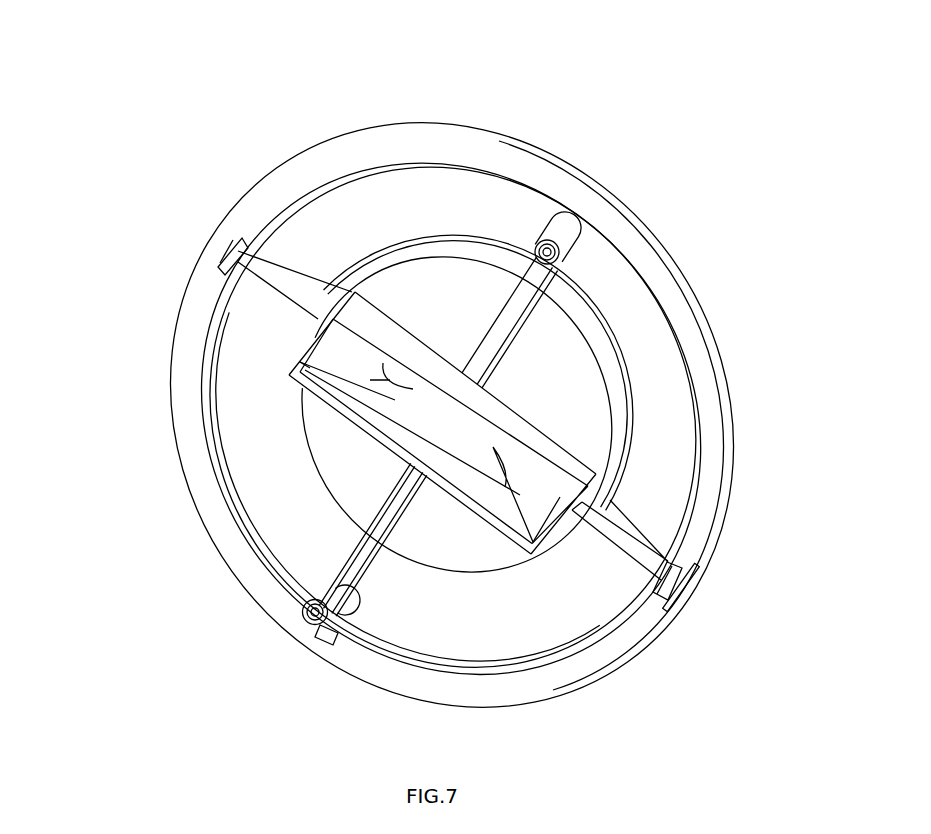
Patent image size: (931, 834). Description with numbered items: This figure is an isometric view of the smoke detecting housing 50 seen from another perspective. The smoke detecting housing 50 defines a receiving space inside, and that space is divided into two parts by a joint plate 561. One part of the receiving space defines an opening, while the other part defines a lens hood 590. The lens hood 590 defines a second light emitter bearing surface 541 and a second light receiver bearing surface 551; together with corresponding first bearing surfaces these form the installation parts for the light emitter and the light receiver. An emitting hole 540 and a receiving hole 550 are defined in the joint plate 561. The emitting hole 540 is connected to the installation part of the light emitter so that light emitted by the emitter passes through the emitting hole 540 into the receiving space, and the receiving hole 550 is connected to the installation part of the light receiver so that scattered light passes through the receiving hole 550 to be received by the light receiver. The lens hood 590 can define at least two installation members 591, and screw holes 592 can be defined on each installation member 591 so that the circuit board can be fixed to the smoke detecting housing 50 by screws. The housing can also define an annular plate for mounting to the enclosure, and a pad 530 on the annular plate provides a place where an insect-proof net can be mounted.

The smoke detecting housing 50 is at (451, 44).
The pad 530 is at (228, 258).
The emitting hole 540 is at (300, 386).
The second light emitter bearing surface 541 is at (345, 355).
The receiving hole 550 is at (497, 505).
The second light receiver bearing surface 551 is at (558, 505).
The joint plate 561 is at (420, 290).
The lens hood 590 is at (507, 425).
The installation member 591 is at (343, 538).
The screw hole 592 is at (553, 250).